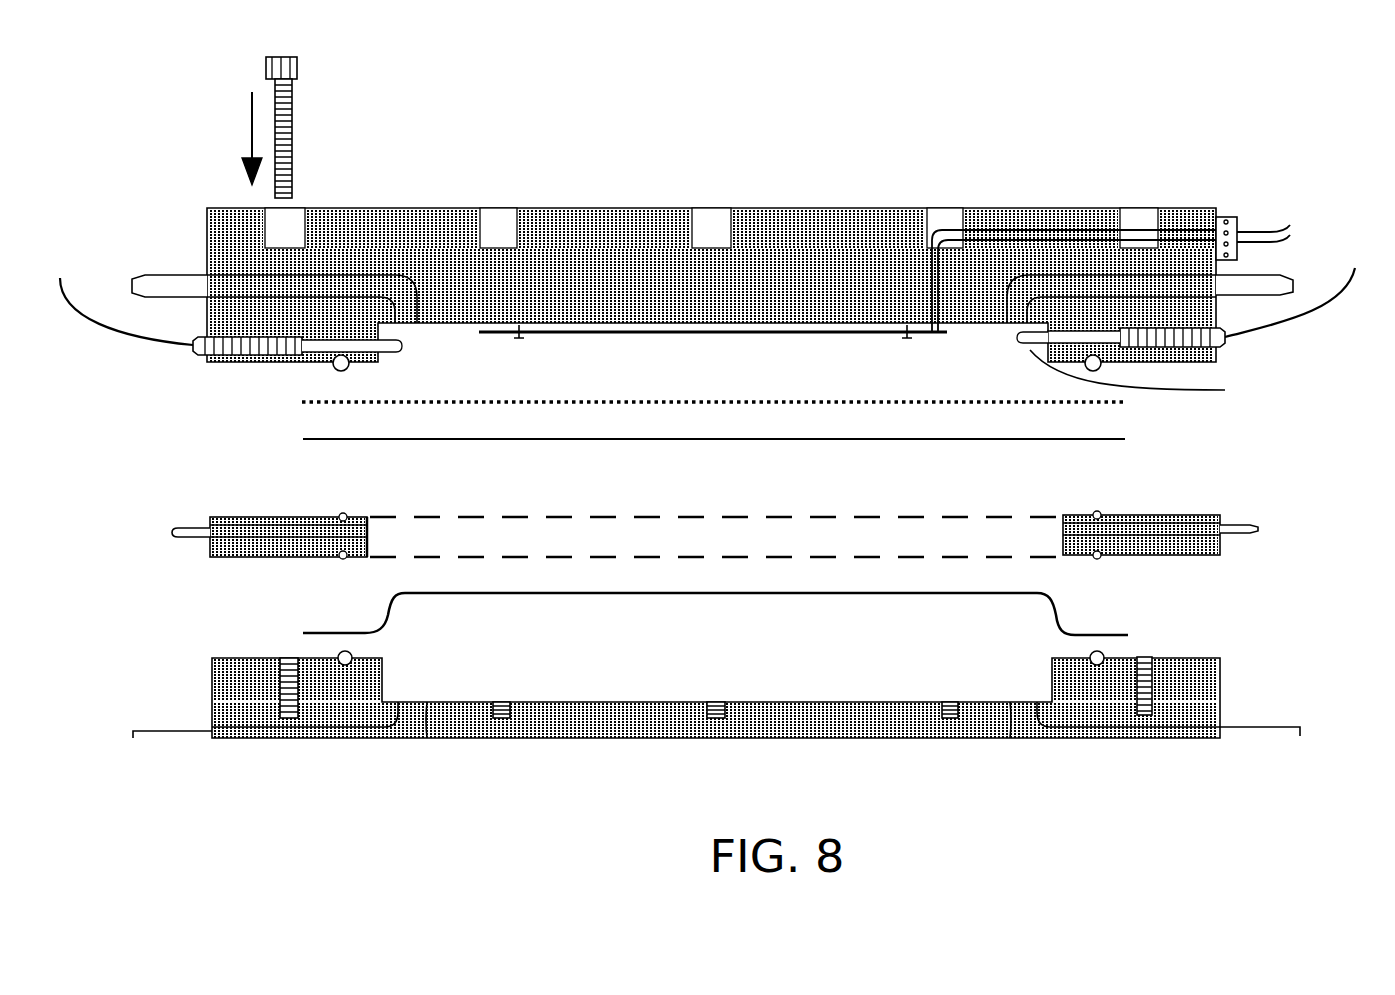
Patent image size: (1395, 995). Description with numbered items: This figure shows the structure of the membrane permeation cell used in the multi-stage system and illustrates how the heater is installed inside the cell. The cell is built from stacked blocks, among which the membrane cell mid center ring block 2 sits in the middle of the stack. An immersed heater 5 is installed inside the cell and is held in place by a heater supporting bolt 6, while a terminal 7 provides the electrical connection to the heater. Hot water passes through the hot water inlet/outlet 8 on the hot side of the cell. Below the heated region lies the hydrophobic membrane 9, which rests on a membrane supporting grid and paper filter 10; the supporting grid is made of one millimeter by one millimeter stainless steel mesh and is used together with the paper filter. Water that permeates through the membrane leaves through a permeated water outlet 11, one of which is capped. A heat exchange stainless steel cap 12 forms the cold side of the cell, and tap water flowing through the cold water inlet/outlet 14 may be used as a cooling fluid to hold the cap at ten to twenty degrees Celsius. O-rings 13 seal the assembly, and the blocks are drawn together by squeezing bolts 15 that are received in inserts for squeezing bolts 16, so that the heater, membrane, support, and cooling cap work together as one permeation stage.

The membrane cell mid center ring block 2 is at (248, 558).
The immersed heater 5 is at (815, 340).
The heater supporting bolt 6 is at (519, 338).
The terminal 7 is at (1245, 222).
The hot water inlet/outlet 8 is at (1275, 268).
The hydrophobic membrane 9 is at (355, 402).
The membrane supporting grid and paper filter 10 is at (365, 447).
The permeated water outlet 11 is at (178, 550).
The heat exchange stainless steel cap 12 is at (1082, 624).
The O-rings 13 is at (1105, 656).
The cold water inlet/outlet 14 is at (160, 727).
The squeezing bolts 15 is at (305, 128).
The inserts for squeezing bolts 16 is at (507, 697).